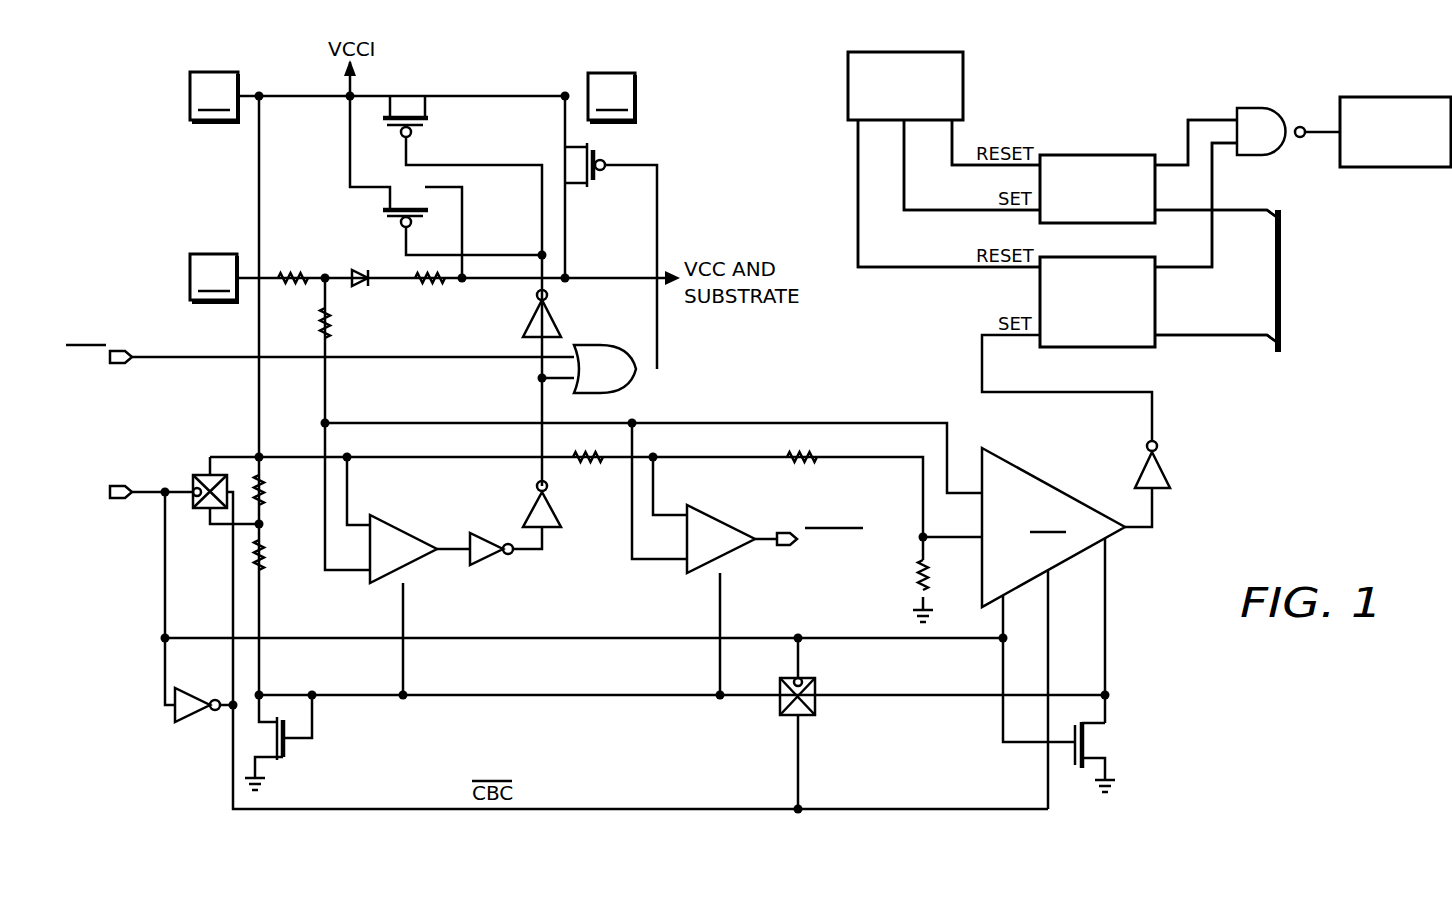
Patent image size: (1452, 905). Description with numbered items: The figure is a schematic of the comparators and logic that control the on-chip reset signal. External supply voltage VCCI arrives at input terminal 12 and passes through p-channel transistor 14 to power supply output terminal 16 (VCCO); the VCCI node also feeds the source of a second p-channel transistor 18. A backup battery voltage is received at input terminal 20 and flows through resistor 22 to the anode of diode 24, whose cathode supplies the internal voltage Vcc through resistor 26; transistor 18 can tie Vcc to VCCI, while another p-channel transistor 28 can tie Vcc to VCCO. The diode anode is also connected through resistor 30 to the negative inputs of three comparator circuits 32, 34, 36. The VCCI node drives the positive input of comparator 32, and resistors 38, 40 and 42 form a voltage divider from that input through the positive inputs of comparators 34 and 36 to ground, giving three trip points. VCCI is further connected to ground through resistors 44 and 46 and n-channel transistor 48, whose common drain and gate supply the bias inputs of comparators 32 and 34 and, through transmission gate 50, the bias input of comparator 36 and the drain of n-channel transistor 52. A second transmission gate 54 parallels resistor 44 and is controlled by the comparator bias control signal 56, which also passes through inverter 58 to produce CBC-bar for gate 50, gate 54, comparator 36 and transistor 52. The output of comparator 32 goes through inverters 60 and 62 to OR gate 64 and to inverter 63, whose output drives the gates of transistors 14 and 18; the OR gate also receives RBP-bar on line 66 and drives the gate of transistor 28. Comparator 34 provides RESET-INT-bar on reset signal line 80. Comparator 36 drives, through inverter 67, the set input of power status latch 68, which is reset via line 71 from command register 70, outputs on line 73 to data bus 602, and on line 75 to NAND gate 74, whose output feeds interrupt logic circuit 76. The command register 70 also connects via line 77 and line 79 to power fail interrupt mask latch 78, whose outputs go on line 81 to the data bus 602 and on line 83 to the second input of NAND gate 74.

The input terminal 12 is at (188, 97).
The p-channel transistor 14 is at (428, 121).
The power supply output terminal 16 is at (645, 97).
The second p-channel transistor 18 is at (379, 213).
The input terminal 20 is at (186, 278).
The resistor 22 is at (290, 249).
The diode 24 is at (364, 306).
The resistor 26 is at (425, 307).
The p-channel transistor 28 is at (617, 159).
The resistor 30 is at (297, 323).
The comparator circuit 32 is at (406, 535).
The comparator circuit 34 is at (730, 527).
The comparator circuit 36 is at (1053, 527).
The resistor 38 is at (588, 489).
The resistor 40 is at (806, 481).
The resistor 42 is at (895, 585).
The resistor 44 is at (287, 498).
The resistor 46 is at (287, 563).
The n-channel transistor 48 is at (308, 744).
The transmission gate 50 is at (823, 703).
The n-channel transistor 52 is at (1114, 745).
The transmission gate 54 is at (199, 467).
The comparator bias control signal 56 is at (107, 474).
The inverter 58 is at (197, 725).
The inverter 60 is at (501, 565).
The inverter 62 is at (523, 499).
The inverter 63 is at (519, 308).
The OR gate 64 is at (605, 337).
The line 66 is at (114, 380).
The inverter 67 is at (1174, 460).
The power status latch 68 is at (1126, 302).
The command register 70 is at (875, 86).
The line 71 is at (922, 193).
The line 73 is at (1216, 363).
The NAND gate 74 is at (1271, 103).
The line 75 is at (1194, 205).
The interrupt logic circuit 76 is at (1395, 162).
The line 77 is at (996, 140).
The power fail interrupt mask latch 78 is at (1097, 162).
The line 79 is at (960, 183).
The reset signal line 80 is at (827, 562).
The line 81 is at (1216, 239).
The line 83 is at (1196, 118).
The data bus 602 is at (1314, 281).